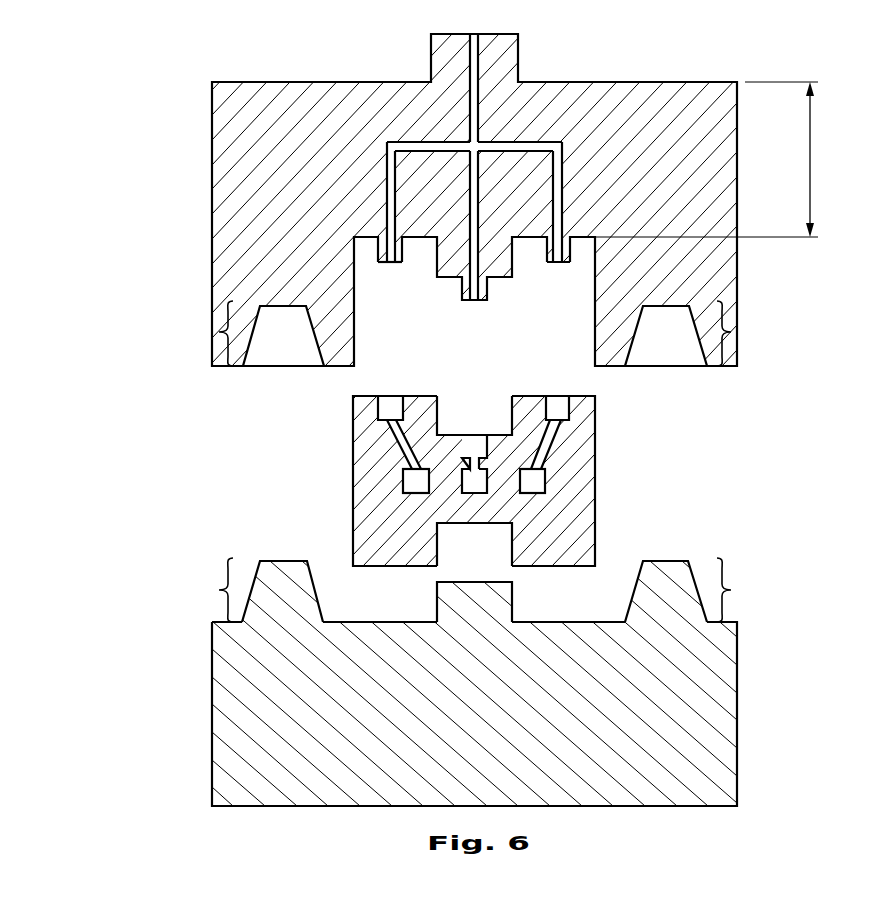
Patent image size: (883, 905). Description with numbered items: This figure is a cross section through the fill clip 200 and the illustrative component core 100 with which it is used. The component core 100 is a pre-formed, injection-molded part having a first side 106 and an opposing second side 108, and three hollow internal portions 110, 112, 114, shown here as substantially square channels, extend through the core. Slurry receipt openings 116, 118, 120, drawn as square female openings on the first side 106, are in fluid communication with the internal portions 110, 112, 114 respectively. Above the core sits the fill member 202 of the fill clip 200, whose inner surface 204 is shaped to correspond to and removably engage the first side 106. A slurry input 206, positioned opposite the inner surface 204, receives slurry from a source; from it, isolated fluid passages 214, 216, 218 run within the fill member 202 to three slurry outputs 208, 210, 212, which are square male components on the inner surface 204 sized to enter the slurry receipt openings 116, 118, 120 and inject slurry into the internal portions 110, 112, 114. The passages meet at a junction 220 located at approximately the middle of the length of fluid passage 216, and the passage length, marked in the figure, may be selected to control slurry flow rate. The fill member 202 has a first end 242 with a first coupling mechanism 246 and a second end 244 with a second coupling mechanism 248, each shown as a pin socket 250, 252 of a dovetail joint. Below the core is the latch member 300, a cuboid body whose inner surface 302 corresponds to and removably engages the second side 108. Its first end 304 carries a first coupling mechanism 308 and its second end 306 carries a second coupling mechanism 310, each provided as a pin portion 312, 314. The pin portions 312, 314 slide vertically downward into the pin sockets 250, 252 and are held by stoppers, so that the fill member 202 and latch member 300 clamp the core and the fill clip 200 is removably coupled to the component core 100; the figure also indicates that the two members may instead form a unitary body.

The fill clip 200 is at (78, 137).
The fill member 202 is at (191, 88).
The inner surface 204 is at (520, 233).
The slurry input 206 is at (474, 50).
The slurry output 208 is at (385, 262).
The slurry output 210 is at (477, 287).
The slurry output 212 is at (560, 264).
The fluid passage 214 is at (388, 202).
The fluid passage 216 is at (475, 178).
The fluid passage 218 is at (557, 148).
The junction 220 is at (474, 148).
The first end 242 is at (231, 291).
The second end 244 is at (729, 310).
The first coupling mechanism 246 is at (219, 332).
The second coupling mechanism 248 is at (730, 332).
The pin socket 250 is at (292, 322).
The pin socket 252 is at (668, 326).
The component core 100 is at (631, 454).
The first side 106 is at (450, 435).
The second side 108 is at (458, 524).
The internal portion 110 is at (410, 482).
The internal portion 112 is at (473, 483).
The internal portion 114 is at (535, 482).
The slurry receipt opening 116 is at (392, 403).
The slurry receipt opening 118 is at (462, 448).
The slurry receipt opening 120 is at (560, 410).
The latch member 300 is at (755, 730).
The inner surface 302 is at (617, 607).
The first end 304 is at (250, 646).
The second end 306 is at (692, 660).
The first coupling mechanism 308 is at (219, 590).
The second coupling mechanism 310 is at (731, 590).
The pin portion 312 is at (282, 592).
The pin portion 314 is at (663, 602).